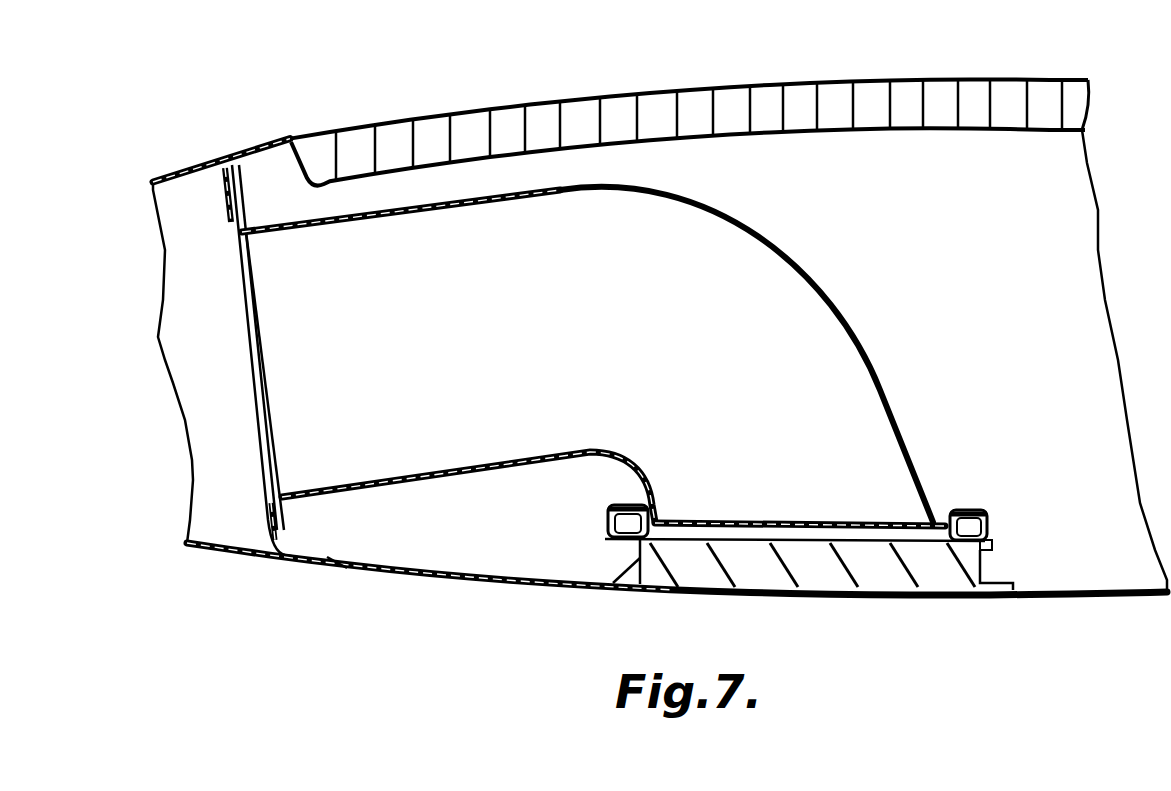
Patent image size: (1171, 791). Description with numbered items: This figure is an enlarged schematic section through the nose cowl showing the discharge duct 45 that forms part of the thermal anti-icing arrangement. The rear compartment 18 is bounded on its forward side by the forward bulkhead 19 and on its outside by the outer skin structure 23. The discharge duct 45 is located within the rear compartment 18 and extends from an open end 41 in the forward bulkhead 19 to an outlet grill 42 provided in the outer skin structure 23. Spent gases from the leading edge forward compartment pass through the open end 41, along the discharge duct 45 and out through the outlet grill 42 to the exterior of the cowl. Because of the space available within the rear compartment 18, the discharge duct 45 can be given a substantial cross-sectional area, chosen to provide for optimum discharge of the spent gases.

The rear compartment 18 is at (947, 160).
The forward bulkhead 19 is at (237, 240).
The outer skin structure 23 is at (1080, 593).
The open end 41 is at (262, 473).
The outlet grill 42 is at (607, 583).
The discharge duct 45 is at (795, 313).